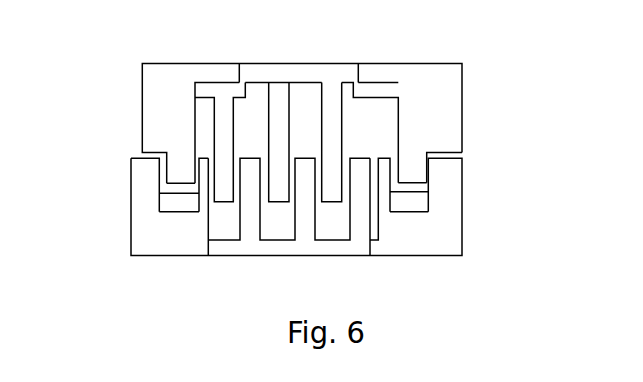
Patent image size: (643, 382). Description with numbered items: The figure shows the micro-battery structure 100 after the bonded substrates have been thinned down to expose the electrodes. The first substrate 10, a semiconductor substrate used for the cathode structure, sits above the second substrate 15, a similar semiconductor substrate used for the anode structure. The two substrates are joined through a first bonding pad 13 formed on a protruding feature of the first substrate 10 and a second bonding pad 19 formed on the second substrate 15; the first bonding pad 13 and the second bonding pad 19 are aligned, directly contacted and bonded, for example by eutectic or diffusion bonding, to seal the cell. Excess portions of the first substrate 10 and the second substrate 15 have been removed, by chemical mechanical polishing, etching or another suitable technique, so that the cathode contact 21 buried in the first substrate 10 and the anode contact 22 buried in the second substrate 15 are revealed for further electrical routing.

The micro-battery structure 100 is at (522, 42).
The first substrate 10 is at (453, 101).
The cathode contact 21 is at (288, 63).
The first bonding pad 13 is at (177, 188).
The second bonding pad 19 is at (168, 203).
The second substrate 15 is at (453, 238).
The anode contact 22 is at (295, 256).